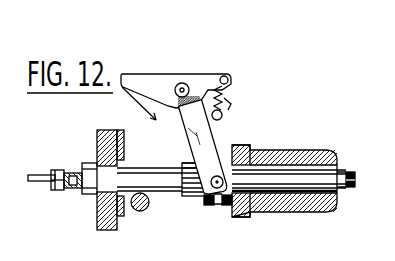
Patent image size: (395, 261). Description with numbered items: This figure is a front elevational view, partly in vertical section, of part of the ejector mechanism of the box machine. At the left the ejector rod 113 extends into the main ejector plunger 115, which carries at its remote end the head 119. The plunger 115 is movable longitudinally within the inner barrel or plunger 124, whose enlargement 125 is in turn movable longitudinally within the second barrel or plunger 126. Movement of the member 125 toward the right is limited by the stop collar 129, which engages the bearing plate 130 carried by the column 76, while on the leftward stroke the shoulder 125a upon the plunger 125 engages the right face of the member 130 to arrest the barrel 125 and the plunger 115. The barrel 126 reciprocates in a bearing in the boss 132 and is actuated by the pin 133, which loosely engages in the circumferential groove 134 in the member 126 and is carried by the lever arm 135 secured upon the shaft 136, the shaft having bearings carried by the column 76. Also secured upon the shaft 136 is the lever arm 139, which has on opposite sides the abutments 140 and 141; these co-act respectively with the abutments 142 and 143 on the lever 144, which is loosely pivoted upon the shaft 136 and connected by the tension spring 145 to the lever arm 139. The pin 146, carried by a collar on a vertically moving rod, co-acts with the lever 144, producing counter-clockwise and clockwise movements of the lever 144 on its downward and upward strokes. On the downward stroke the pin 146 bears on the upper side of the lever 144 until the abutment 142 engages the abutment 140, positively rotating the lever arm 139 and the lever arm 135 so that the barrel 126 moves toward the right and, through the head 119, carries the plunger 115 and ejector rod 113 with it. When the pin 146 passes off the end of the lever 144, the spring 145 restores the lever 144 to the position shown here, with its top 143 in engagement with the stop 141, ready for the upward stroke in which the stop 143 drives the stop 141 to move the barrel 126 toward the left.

The ejector rod 113 is at (32, 186).
The main ejector plunger 115 is at (58, 191).
The stop collar 129 is at (84, 189).
The bearing plate 130 is at (98, 230).
The column 76 is at (140, 212).
The pin 146 is at (158, 193).
The inner barrel or plunger 124 is at (188, 197).
The shoulder 125a is at (180, 165).
The enlargement (barrel) 125 is at (218, 208).
The circumferential groove 134 is at (224, 207).
The pin 133 is at (248, 213).
The boss 132 is at (277, 212).
The second barrel or plunger 126 is at (287, 181).
The head 119 is at (348, 171).
The lever 144 is at (139, 69).
The abutment 142 is at (172, 120).
The shaft 136 is at (178, 86).
The abutment (top/stop) 143 is at (183, 84).
The abutment (stop) 141 is at (206, 100).
The tension spring 145 is at (220, 112).
The abutment 140 is at (221, 119).
The lever arm 139 is at (225, 100).
The lever arm 135 is at (189, 133).